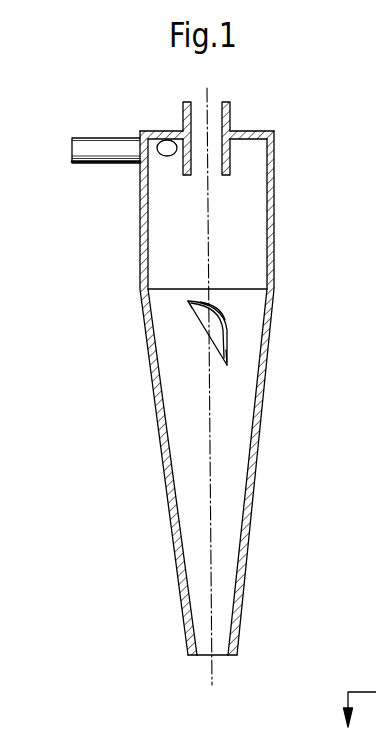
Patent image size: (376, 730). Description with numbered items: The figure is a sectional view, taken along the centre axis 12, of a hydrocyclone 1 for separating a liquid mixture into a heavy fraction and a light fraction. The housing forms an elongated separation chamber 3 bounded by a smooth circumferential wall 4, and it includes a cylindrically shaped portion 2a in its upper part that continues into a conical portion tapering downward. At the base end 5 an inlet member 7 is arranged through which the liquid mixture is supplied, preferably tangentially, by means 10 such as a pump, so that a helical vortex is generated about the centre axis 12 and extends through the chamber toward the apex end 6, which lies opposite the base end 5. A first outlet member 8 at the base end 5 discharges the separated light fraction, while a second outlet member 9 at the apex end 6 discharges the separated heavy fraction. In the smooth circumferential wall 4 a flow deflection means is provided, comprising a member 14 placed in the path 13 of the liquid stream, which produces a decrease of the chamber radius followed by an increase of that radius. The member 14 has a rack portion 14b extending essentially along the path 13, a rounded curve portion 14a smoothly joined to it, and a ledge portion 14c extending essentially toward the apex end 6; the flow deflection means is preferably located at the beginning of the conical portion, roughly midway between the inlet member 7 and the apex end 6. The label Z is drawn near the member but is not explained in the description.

The hydrocyclone 1 is at (140, 562).
The cylindrically shaped portion 2a is at (142, 237).
The separation chamber 3 is at (223, 482).
The smooth circumferential wall 4 is at (260, 430).
The base end 5 is at (248, 130).
The apex end 6 is at (231, 657).
The inlet member 7 is at (162, 153).
The first outlet member 8 is at (197, 107).
The second outlet member 9 is at (203, 657).
The means for supplying liquid mixture 10 is at (75, 148).
The centre axis 12 is at (207, 545).
The path of the liquid stream 13 is at (240, 238).
The member of flow deflection means 14 is at (218, 343).
The rounded curve portion 14a is at (219, 307).
The rack portion 14b is at (188, 301).
The ledge portion 14c is at (227, 358).
The central axis Z is at (192, 301).